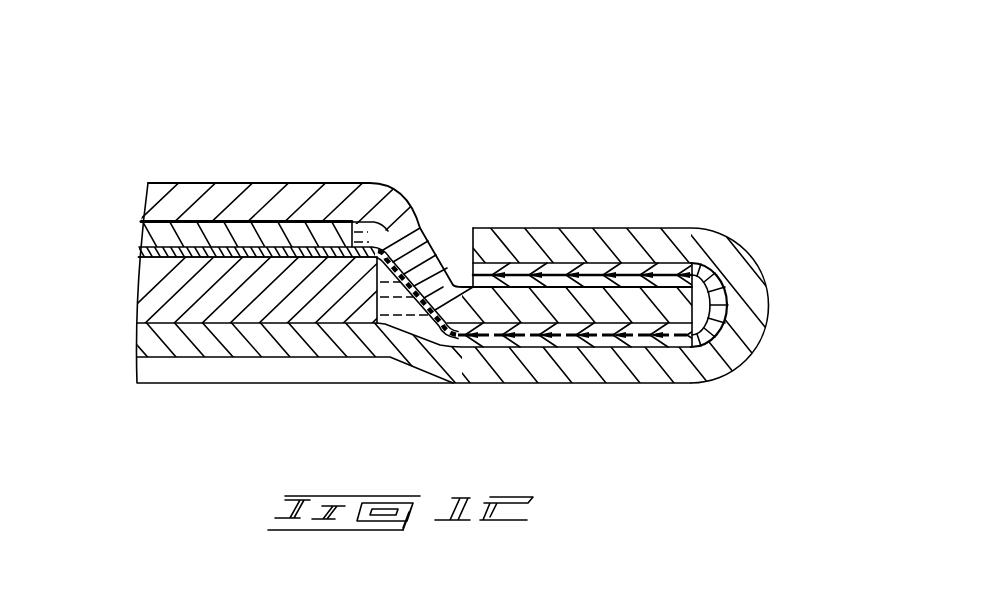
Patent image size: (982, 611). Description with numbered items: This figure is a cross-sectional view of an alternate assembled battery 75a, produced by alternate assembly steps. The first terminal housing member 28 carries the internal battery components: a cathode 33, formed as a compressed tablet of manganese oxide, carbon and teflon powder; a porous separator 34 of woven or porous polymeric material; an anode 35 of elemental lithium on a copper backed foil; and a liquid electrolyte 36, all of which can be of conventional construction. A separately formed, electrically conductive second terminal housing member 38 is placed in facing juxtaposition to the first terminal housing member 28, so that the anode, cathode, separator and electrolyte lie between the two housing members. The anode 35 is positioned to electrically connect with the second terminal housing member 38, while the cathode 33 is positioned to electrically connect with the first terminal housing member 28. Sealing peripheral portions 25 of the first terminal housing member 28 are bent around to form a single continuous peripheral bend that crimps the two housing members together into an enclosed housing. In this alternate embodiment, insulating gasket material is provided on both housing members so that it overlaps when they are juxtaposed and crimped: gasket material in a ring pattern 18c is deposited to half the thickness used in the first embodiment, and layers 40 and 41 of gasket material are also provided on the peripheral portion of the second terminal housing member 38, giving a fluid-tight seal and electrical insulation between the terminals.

The alternate assembled battery 75a is at (467, 105).
The second terminal housing member 38 is at (167, 204).
The liquid electrolyte 36 is at (403, 257).
The layer of gasket material 40 is at (515, 275).
The sealing peripheral portions 25 is at (573, 243).
The ring pattern of gasket material 18c is at (603, 262).
The anode 35 is at (140, 231).
The porous separator 34 is at (140, 255).
The cathode 33 is at (143, 298).
The first terminal housing member 28 is at (222, 350).
The layer of gasket material 41 is at (608, 327).